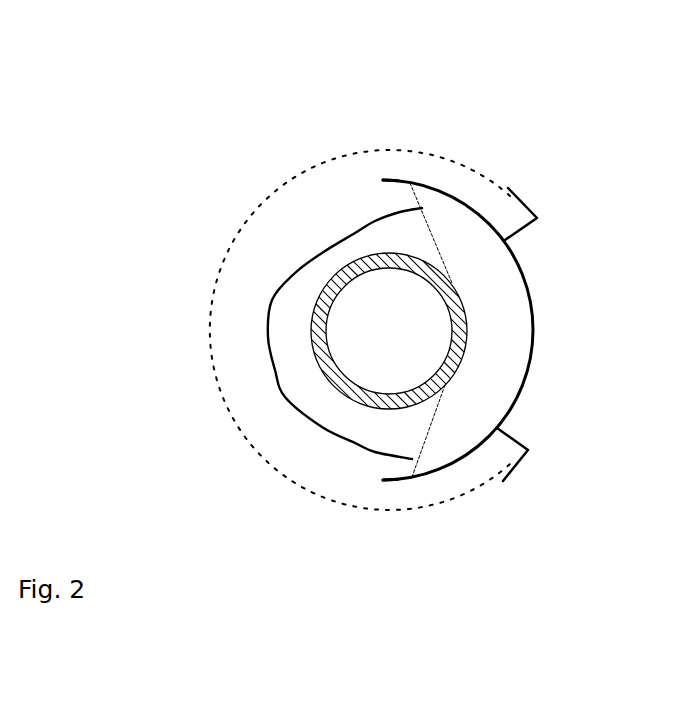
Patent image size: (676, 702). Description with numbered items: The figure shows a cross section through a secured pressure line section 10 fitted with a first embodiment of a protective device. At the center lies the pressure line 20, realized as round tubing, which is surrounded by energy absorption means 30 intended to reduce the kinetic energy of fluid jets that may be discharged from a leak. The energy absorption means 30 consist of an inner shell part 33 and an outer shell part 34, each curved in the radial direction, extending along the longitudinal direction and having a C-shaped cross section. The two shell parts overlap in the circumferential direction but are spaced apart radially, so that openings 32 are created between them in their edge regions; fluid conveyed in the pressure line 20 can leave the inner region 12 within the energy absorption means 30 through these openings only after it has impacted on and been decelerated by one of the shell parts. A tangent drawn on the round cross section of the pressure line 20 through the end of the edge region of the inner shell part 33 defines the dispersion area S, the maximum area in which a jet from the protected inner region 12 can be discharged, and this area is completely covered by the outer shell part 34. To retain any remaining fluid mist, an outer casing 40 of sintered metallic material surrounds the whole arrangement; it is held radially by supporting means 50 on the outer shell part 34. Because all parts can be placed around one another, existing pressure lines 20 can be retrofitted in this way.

The pressure line section 10 is at (426, 98).
The inner region 12 is at (307, 260).
The pressure line 20 is at (394, 409).
The energy absorption means 30 is at (526, 250).
The openings 32 is at (363, 190).
The inner shell part 33 is at (276, 286).
The outer shell part 34 is at (531, 300).
The outer casing 40 is at (297, 485).
The supporting means 50 is at (527, 206).
The dispersion area S is at (500, 376).